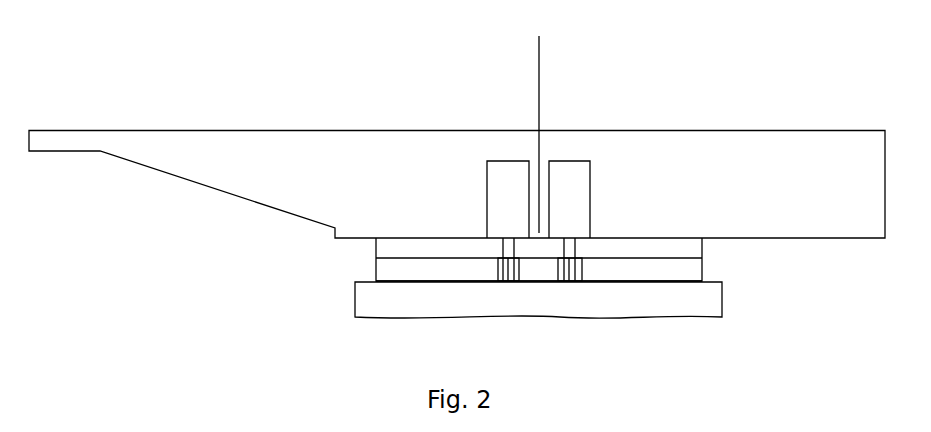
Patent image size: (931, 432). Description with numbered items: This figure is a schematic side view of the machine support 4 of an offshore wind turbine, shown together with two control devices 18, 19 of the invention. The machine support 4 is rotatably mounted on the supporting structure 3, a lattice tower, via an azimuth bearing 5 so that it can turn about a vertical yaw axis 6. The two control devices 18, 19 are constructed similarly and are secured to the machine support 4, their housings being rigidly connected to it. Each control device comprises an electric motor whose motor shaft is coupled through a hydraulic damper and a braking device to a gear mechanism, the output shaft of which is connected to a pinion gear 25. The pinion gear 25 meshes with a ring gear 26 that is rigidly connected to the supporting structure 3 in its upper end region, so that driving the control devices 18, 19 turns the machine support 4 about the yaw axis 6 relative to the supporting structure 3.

The supporting structure 3 is at (347, 305).
The machine support 4 is at (798, 130).
The azimuth bearing 5 is at (364, 260).
The yaw axis 6 is at (539, 63).
The control device 18 is at (503, 166).
The control device 19 is at (583, 166).
The pinion gear 25 is at (503, 268).
The ring gear 26 is at (697, 270).